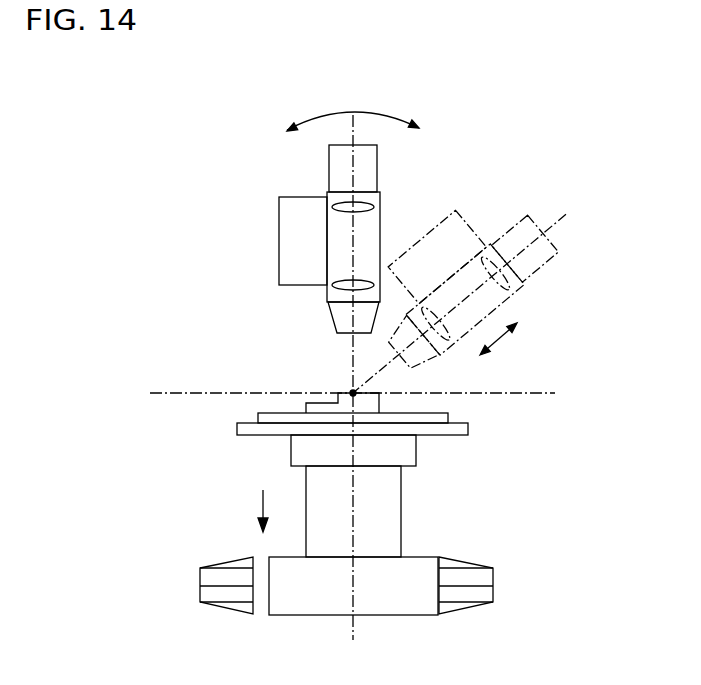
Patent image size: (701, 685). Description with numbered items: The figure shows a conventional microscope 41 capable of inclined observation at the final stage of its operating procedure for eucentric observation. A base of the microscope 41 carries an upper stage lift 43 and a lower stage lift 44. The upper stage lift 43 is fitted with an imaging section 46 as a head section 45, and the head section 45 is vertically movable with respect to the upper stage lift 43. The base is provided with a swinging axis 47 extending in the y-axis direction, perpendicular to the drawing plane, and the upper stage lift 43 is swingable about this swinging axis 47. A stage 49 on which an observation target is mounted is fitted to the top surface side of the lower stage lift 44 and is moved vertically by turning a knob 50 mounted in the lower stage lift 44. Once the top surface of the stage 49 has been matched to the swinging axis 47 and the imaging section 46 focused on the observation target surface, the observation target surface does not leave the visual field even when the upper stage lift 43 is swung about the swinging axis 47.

The microscope 41 is at (238, 170).
The upper stage lift 43 is at (300, 238).
The lower stage lift 44 is at (380, 508).
The head section 45 is at (363, 235).
The imaging section 46 is at (363, 167).
The swinging axis 47 is at (351, 391).
The stage 49 is at (470, 427).
The knob 50 is at (477, 580).